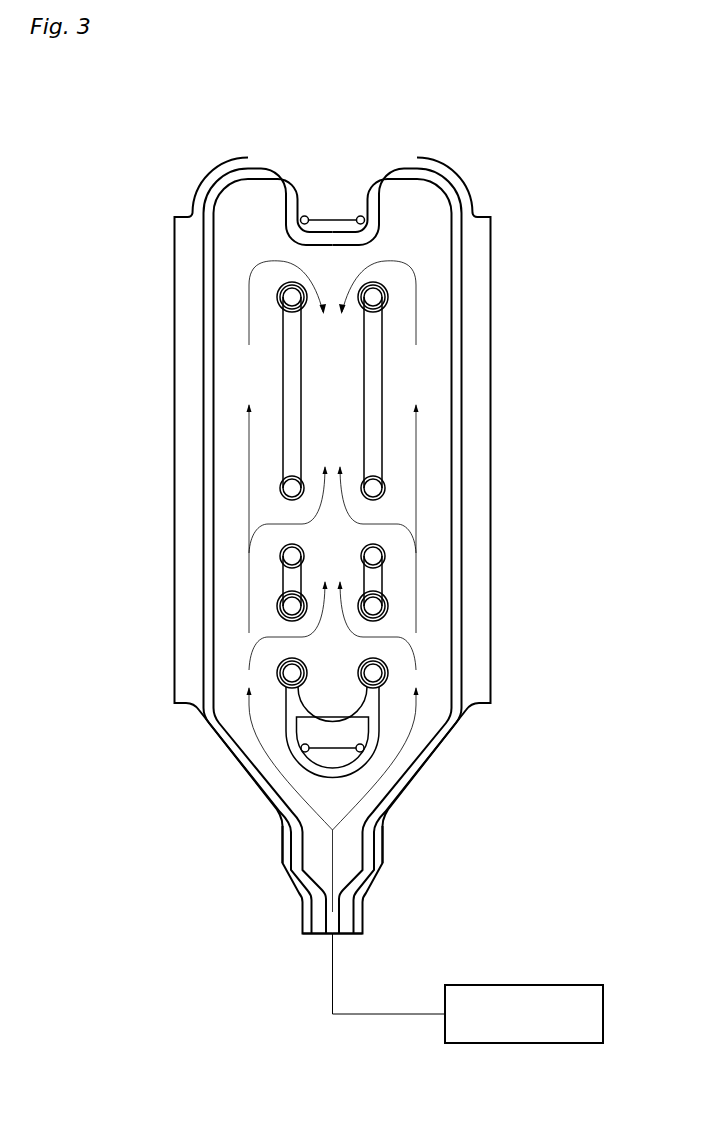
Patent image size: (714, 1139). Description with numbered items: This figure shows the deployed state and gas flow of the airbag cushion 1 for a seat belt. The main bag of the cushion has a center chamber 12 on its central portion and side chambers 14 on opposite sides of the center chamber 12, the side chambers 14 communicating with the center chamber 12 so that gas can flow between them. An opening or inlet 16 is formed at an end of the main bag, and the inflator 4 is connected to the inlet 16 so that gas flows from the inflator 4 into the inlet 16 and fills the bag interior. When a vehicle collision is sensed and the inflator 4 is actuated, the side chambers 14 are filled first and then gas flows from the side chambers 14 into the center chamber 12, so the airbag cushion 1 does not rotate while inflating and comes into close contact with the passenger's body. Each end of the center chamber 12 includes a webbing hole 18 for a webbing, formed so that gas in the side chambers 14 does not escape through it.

The airbag cushion 1 is at (170, 219).
The inflator 4 is at (522, 985).
The center chamber 12 is at (335, 385).
The side chambers 14 is at (227, 527).
The inlet 16 is at (348, 848).
The webbing hole 18 is at (332, 218).